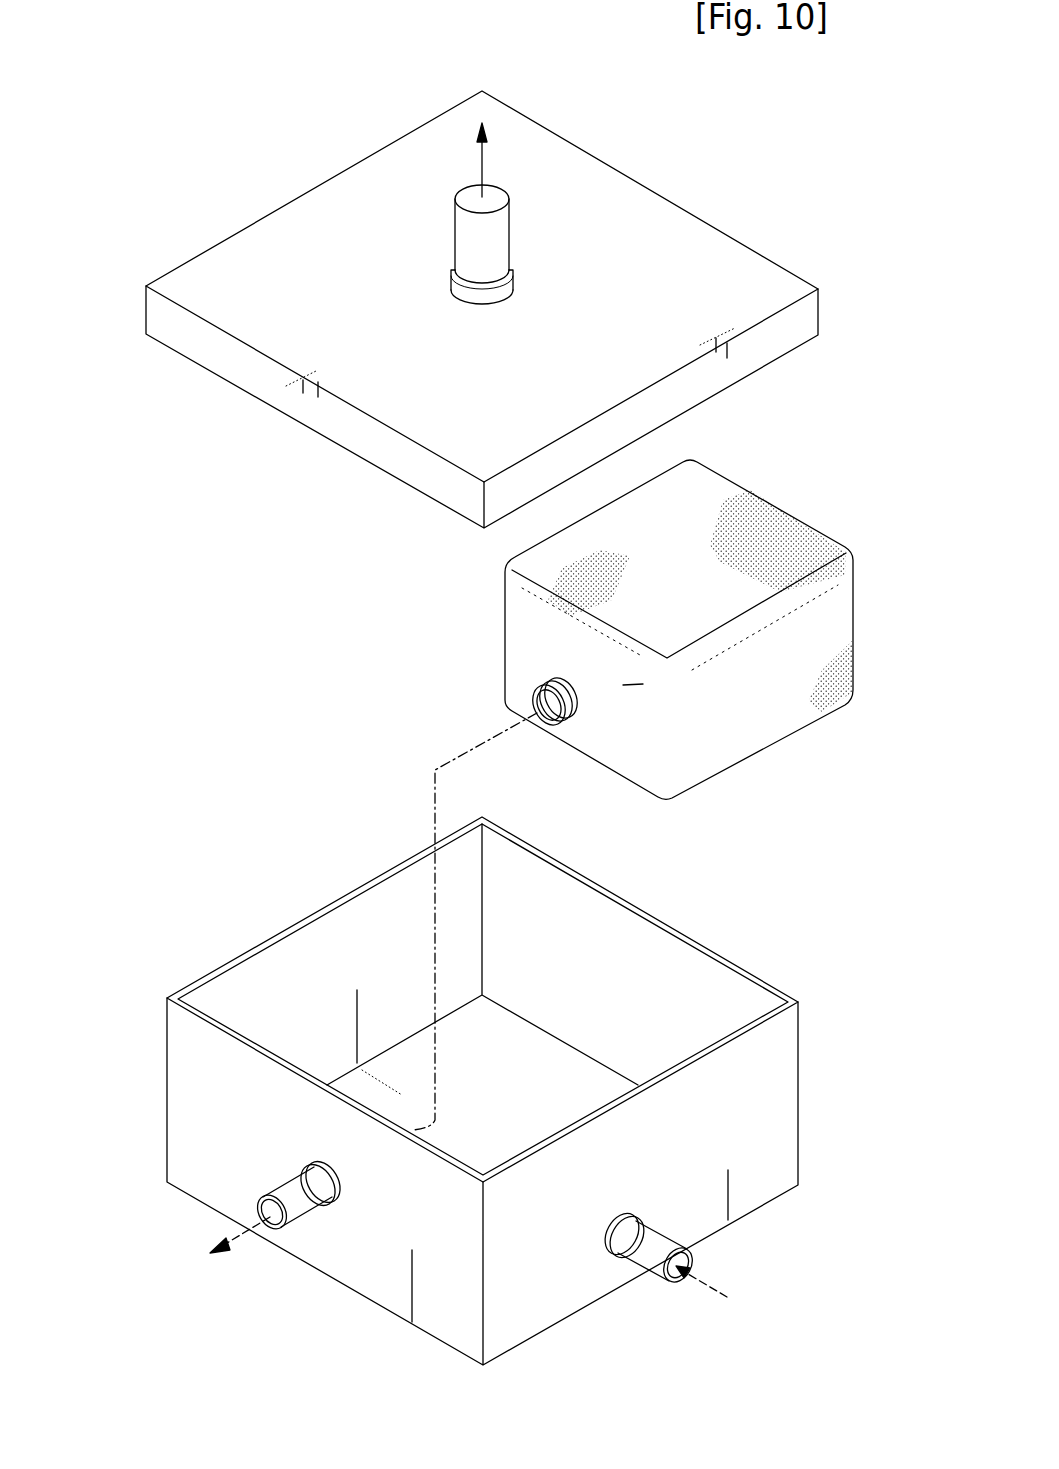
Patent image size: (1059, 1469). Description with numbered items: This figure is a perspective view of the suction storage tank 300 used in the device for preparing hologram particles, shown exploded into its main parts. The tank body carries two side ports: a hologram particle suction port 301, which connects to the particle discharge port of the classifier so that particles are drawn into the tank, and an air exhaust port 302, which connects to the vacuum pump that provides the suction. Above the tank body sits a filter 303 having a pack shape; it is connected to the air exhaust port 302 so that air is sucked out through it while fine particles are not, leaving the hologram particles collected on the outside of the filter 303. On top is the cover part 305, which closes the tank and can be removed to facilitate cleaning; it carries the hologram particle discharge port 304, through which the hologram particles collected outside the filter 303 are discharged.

The suction storage tank 300 is at (128, 553).
The hologram particle suction port 301 is at (696, 1250).
The air exhaust port 302 is at (257, 1218).
The filter 303 is at (770, 768).
The hologram particle discharge port 304 is at (509, 227).
The cover part 305 is at (722, 230).